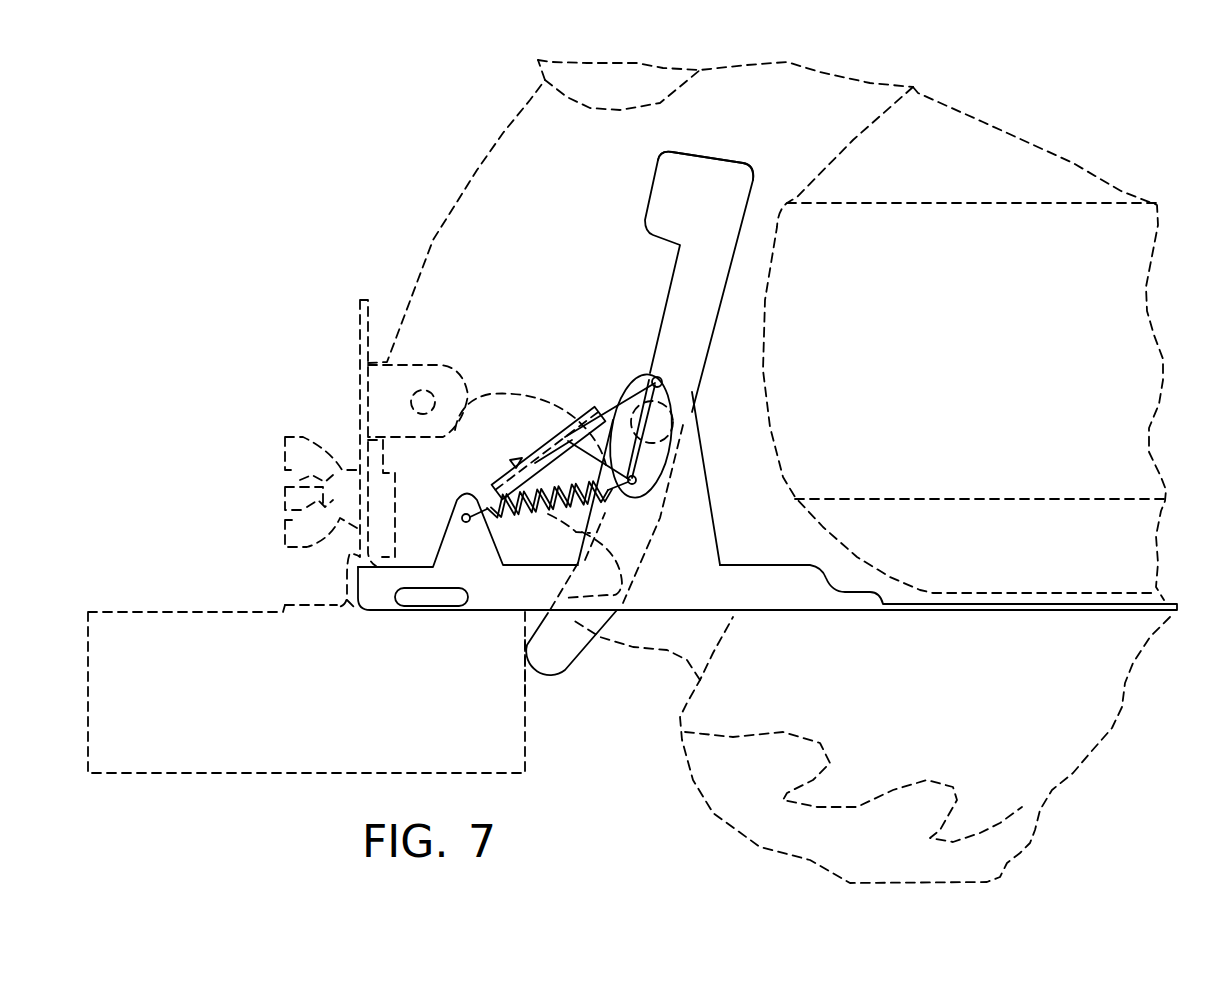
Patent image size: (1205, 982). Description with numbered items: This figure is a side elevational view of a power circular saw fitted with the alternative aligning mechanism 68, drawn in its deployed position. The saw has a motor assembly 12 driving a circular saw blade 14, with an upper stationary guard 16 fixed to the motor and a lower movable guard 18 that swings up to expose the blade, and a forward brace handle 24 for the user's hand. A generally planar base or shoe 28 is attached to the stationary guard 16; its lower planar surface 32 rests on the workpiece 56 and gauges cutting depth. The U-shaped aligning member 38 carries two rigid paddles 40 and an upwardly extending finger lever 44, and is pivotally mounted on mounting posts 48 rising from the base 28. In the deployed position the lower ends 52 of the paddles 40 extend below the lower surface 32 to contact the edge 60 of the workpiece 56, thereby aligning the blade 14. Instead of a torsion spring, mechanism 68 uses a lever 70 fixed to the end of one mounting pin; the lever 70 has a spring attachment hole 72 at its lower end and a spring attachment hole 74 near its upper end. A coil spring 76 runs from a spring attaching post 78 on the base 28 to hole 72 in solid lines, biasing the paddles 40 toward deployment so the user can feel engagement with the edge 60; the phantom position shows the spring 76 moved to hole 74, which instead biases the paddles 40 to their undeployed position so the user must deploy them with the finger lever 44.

The motor assembly 12 is at (1155, 336).
The circular saw blade 14 is at (668, 718).
The upper stationary guard 16 is at (437, 235).
The lower movable guard 18 is at (862, 873).
The forward brace handle 24 is at (621, 76).
The base or shoe 28 is at (355, 581).
The lower planar surface 32 is at (690, 613).
The U-shaped aligning member 38 is at (700, 343).
The paddles 40 is at (648, 582).
The finger lever 44 is at (717, 165).
The mounting posts 48 is at (708, 532).
The lower ends of the paddles 52 is at (568, 672).
The workpiece 56 is at (262, 773).
The edge of the workpiece 60 is at (528, 762).
The alternative aligning mechanism 68 is at (626, 350).
The lever 70 is at (652, 478).
The spring attachment hole 72 is at (568, 433).
The spring attachment hole 74 is at (667, 384).
The coil spring 76 is at (533, 515).
The spring attaching post 78 is at (452, 545).